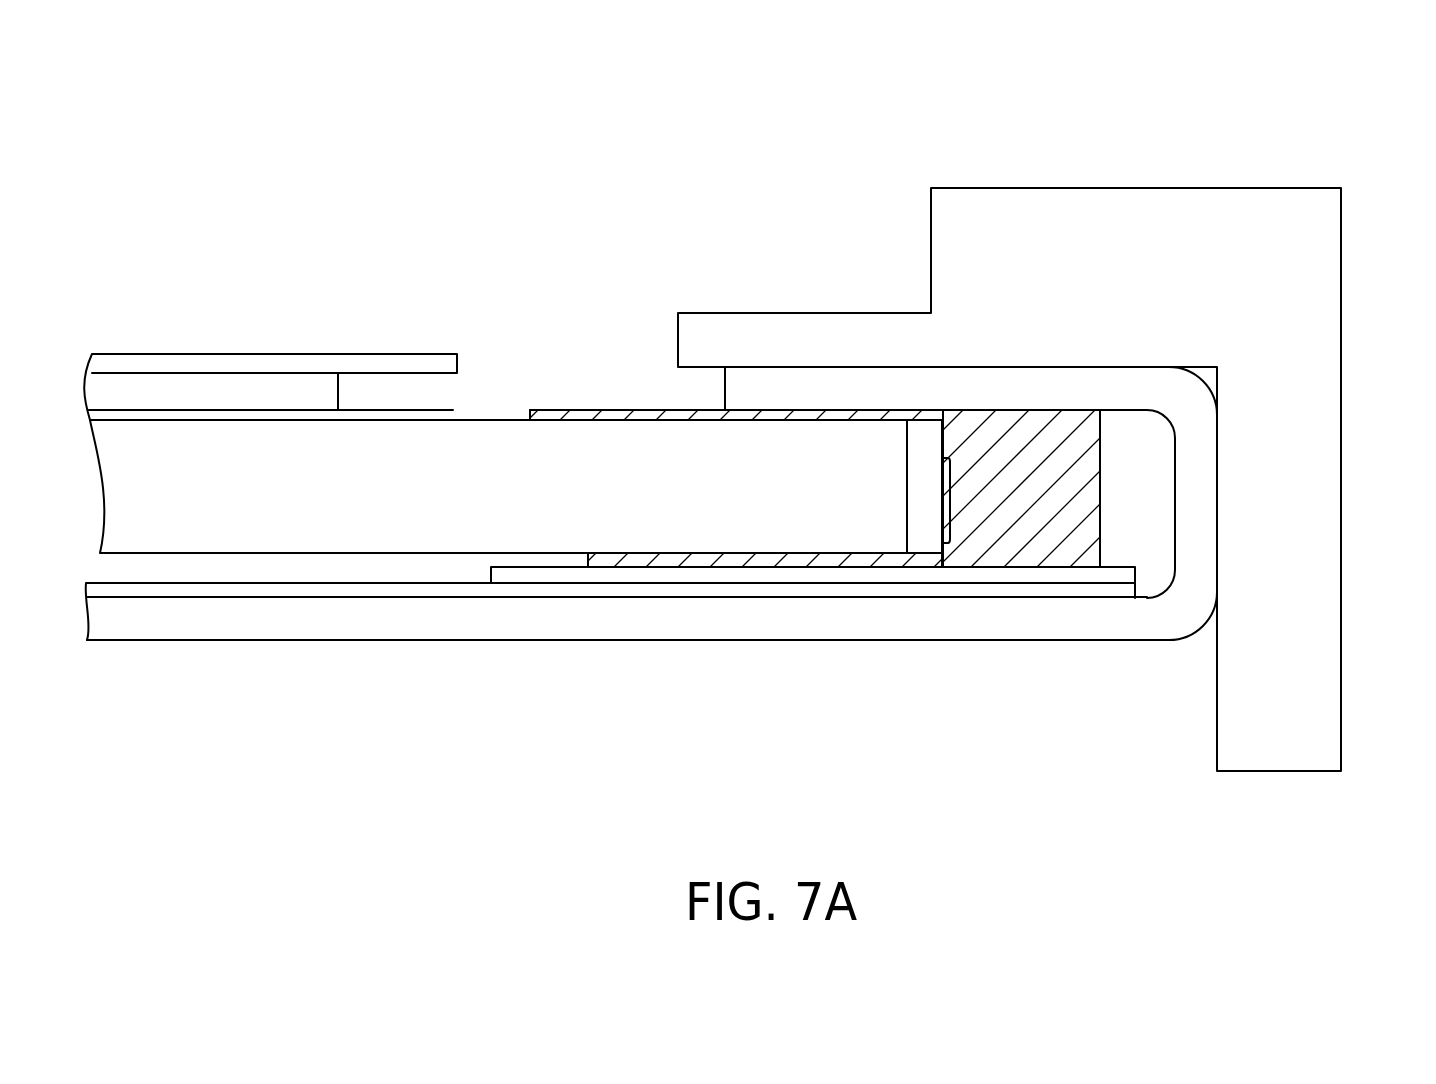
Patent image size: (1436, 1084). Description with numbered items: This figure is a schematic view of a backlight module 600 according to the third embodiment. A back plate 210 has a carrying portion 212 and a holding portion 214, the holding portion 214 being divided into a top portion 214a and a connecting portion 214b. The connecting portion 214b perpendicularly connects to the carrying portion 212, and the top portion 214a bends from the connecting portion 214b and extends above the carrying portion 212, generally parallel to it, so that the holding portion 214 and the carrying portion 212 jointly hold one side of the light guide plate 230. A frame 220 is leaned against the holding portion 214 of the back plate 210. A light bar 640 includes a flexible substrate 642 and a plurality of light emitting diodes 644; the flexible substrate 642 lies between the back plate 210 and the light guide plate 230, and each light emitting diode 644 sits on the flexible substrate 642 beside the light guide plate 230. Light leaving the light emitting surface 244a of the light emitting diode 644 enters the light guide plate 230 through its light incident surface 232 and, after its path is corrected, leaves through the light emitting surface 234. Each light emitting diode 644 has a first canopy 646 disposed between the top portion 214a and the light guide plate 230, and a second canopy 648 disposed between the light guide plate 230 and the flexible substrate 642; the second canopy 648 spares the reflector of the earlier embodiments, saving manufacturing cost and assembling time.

The back plate 210 is at (627, 495).
The carrying portion 212 is at (743, 613).
The holding portion 214 is at (628, 465).
The top portion 214a is at (760, 390).
The connecting portion 214b is at (1202, 501).
The frame 220 is at (1212, 202).
The light guide plate 230 is at (278, 445).
The light incident surface 232 is at (914, 461).
The light emitting surface 234 is at (173, 420).
The light emitting surface 244a is at (933, 503).
The backlight module 600 is at (1273, 857).
The light bar 640 is at (820, 596).
The flexible substrate 642 is at (1013, 580).
The light emitting diode 644 is at (1077, 552).
The first canopy 646 is at (617, 420).
The second canopy 648 is at (610, 563).